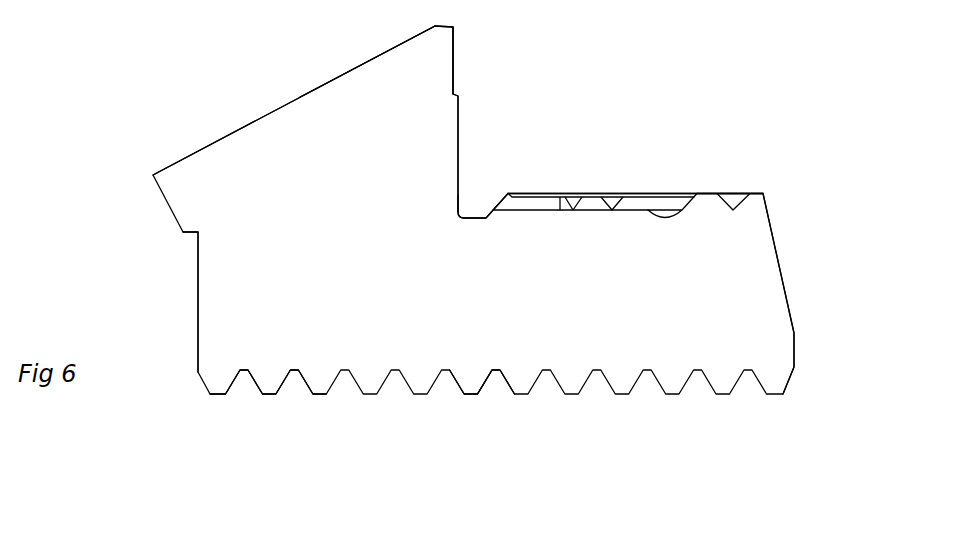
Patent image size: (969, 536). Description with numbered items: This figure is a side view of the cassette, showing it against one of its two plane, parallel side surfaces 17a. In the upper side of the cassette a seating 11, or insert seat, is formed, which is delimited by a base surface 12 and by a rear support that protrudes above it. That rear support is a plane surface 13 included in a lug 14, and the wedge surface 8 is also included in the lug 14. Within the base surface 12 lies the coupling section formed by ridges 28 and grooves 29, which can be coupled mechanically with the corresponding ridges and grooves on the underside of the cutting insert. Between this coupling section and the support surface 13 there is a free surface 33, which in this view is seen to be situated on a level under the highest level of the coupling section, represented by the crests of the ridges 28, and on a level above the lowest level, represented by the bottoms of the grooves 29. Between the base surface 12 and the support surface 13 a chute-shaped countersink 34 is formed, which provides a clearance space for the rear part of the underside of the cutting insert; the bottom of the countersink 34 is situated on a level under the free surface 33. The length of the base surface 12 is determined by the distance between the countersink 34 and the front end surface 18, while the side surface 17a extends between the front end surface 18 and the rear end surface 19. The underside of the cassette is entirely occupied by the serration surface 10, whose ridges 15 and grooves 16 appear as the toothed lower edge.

The seating 11 is at (592, 103).
The wedge surface 8 is at (263, 117).
The lug 14 is at (382, 93).
The plane surface 13 is at (460, 130).
The countersink 34 is at (474, 210).
The ridges 28 is at (657, 193).
The base surface 12 is at (706, 178).
The free surface 33 is at (519, 210).
The grooves 29 is at (670, 212).
The front end surface 18 is at (780, 267).
The rear end surface 19 is at (197, 302).
The side surface 17a is at (655, 322).
The grooves 16 is at (497, 374).
The ridges 15 is at (470, 383).
The serration surface 10 is at (288, 404).